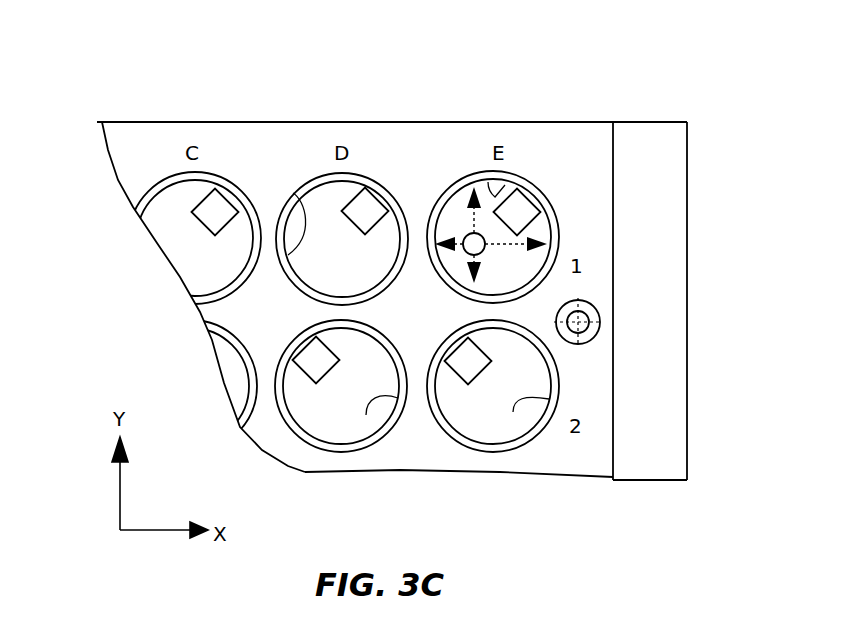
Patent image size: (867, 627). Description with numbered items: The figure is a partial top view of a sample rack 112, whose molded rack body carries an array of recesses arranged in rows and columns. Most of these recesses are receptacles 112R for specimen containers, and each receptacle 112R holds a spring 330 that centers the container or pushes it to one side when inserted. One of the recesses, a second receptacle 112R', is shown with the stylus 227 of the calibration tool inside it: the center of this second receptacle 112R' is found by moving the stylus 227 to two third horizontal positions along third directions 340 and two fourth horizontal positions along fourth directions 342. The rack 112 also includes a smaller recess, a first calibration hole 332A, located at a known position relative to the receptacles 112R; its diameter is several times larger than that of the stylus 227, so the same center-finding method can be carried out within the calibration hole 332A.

The sample rack 112 is at (415, 108).
The receptacle 112R is at (314, 299).
The second receptacle 112R' is at (531, 194).
The spring 330 is at (343, 212).
The third directions 340 is at (500, 247).
The fourth directions 342 is at (472, 215).
The stylus 227 is at (465, 255).
The first calibration hole 332A is at (600, 331).